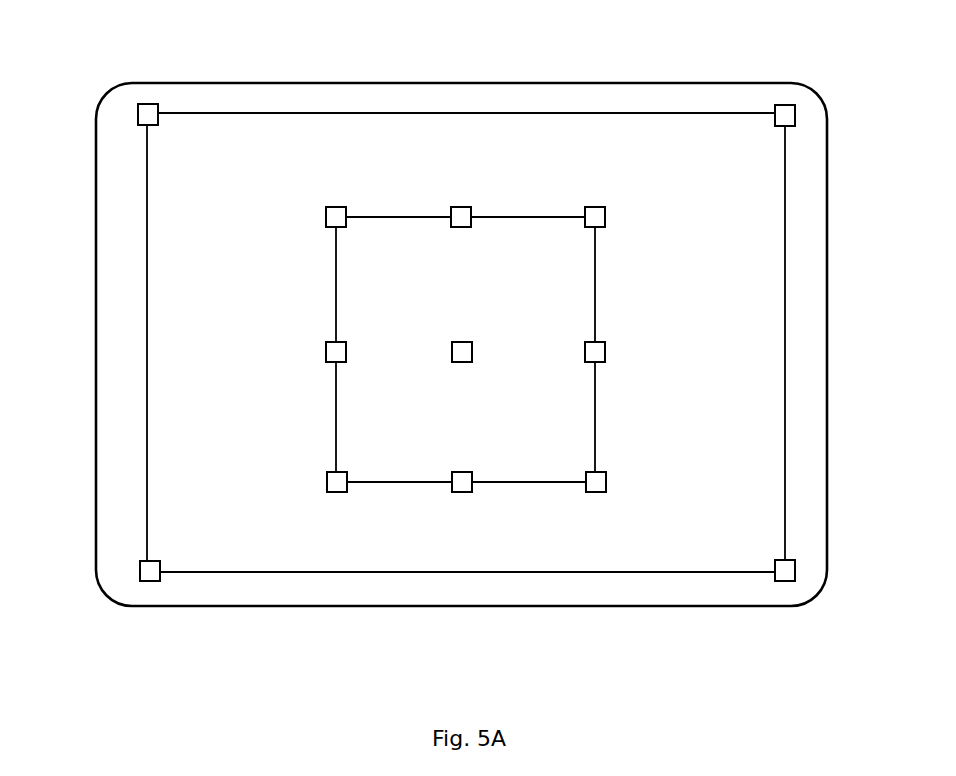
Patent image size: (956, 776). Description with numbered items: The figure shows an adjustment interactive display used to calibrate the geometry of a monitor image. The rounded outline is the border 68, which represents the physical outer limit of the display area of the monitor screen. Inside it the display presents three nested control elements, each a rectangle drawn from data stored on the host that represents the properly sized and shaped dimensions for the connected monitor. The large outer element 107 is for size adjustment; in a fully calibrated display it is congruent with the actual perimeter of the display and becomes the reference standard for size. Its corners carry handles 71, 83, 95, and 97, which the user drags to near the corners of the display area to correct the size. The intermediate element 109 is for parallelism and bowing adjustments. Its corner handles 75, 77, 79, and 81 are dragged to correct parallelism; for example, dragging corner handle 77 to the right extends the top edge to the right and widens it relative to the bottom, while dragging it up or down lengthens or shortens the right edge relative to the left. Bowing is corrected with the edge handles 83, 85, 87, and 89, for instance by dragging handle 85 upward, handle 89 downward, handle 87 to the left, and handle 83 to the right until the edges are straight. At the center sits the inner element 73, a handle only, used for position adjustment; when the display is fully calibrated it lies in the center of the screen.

The border 68 is at (257, 83).
The outer control element 107 is at (346, 100).
The intermediate control element 109 is at (318, 269).
The corner handle 71 is at (138, 105).
The handle 83 is at (786, 106).
The corner handle 95 is at (797, 572).
The corner handle 97 is at (139, 573).
The inner control element 73 is at (452, 351).
The corner handle 75 is at (336, 207).
The corner handle 77 is at (596, 207).
The corner handle 79 is at (327, 481).
The corner handle 81 is at (607, 483).
The edge handle 85 is at (461, 207).
The edge handle 87 is at (326, 351).
The edge handle 89 is at (462, 472).